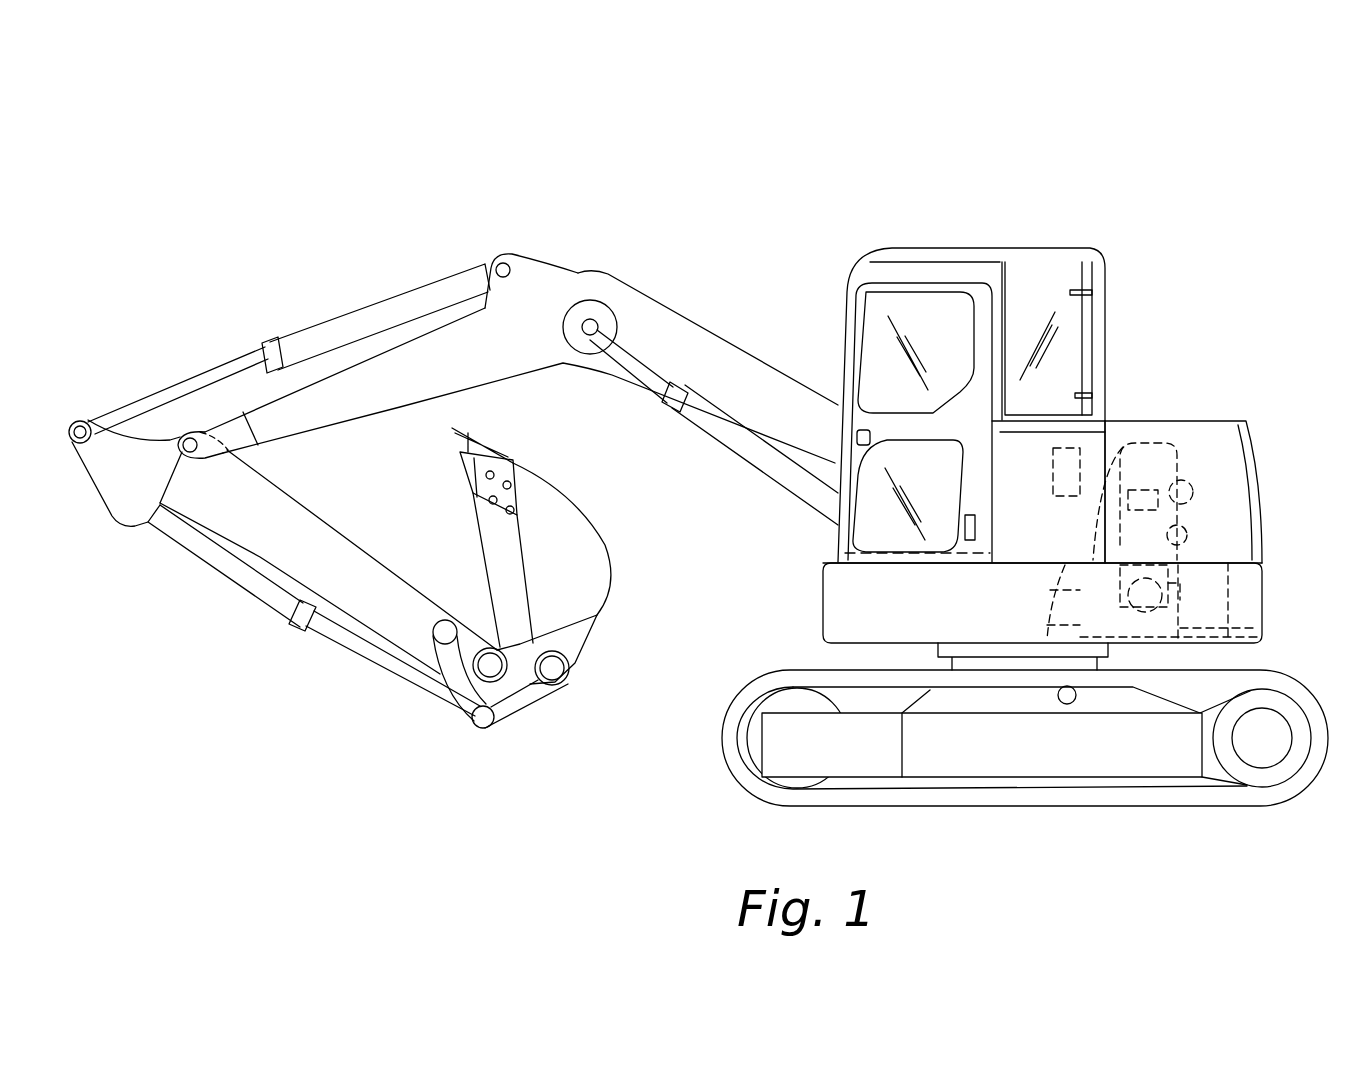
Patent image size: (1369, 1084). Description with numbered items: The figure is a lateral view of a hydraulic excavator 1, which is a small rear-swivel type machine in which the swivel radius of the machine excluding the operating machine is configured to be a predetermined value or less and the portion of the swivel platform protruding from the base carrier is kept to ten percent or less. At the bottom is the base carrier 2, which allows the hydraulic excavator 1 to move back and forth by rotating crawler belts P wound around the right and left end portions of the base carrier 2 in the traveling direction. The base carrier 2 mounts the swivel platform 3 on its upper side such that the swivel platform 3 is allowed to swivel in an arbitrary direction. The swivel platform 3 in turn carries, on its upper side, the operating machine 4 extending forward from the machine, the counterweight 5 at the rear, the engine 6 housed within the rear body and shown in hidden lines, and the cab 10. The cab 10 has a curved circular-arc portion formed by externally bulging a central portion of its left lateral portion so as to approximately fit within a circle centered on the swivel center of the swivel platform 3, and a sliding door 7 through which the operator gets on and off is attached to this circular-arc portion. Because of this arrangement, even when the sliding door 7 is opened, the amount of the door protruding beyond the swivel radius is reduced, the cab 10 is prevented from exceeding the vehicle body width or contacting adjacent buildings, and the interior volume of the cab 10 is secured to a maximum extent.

The hydraulic excavator 1 is at (1228, 120).
The base carrier 2 is at (696, 796).
The swivel platform 3 is at (832, 598).
The operating machine 4 is at (607, 174).
The counterweight 5 is at (1254, 483).
The engine 6 is at (1212, 521).
The sliding door 7 is at (873, 330).
The cab 10 is at (826, 260).
The crawler belts P is at (1272, 672).